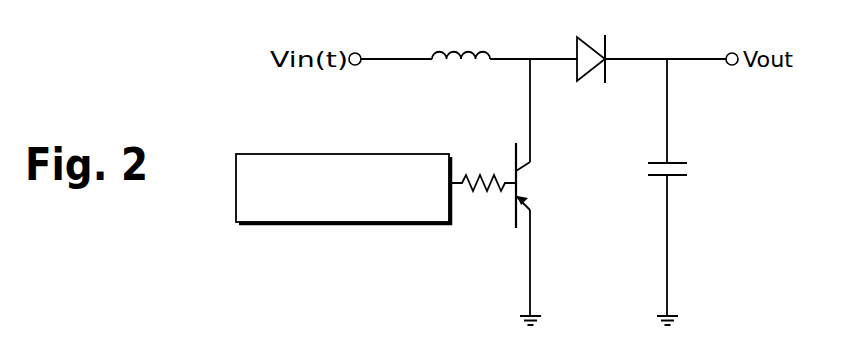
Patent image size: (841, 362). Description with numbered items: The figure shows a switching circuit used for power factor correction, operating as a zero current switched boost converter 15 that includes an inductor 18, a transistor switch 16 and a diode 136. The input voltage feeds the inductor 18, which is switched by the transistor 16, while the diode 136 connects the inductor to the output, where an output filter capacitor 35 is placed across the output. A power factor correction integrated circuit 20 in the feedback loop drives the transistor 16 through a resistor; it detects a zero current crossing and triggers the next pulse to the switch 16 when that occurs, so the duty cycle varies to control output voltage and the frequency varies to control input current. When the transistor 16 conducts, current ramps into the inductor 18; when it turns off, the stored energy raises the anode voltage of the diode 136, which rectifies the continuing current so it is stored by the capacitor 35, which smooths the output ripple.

The zero current switching boost circuit 15 is at (462, 45).
The inductor 18 is at (471, 57).
The diode 136 is at (587, 40).
The transistor switch 16 is at (525, 172).
The power factor correction integrated circuit 20 is at (368, 222).
The output filter capacitor 35 is at (669, 177).